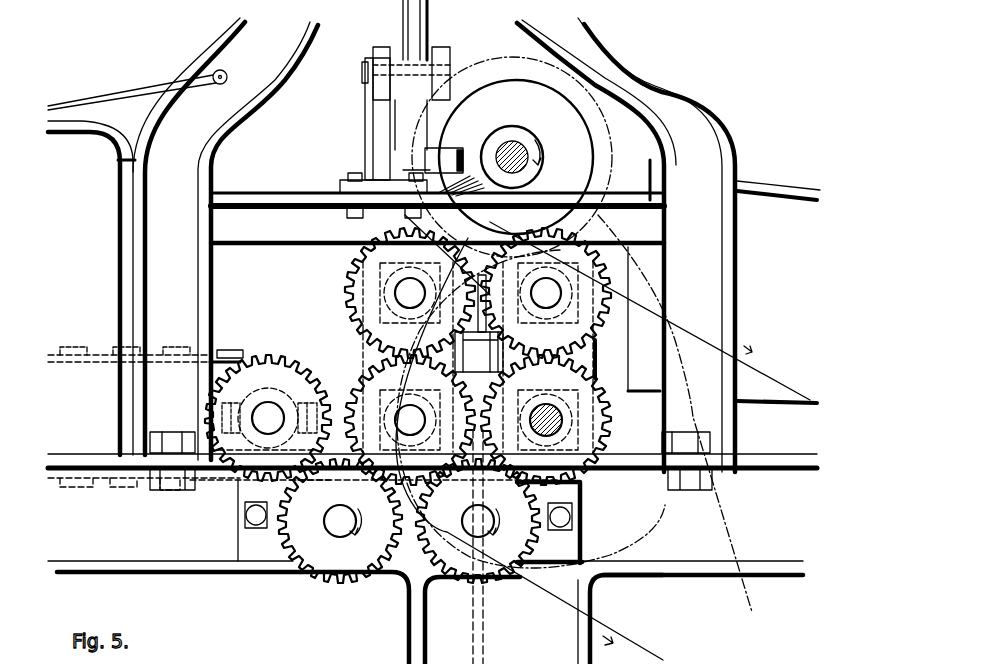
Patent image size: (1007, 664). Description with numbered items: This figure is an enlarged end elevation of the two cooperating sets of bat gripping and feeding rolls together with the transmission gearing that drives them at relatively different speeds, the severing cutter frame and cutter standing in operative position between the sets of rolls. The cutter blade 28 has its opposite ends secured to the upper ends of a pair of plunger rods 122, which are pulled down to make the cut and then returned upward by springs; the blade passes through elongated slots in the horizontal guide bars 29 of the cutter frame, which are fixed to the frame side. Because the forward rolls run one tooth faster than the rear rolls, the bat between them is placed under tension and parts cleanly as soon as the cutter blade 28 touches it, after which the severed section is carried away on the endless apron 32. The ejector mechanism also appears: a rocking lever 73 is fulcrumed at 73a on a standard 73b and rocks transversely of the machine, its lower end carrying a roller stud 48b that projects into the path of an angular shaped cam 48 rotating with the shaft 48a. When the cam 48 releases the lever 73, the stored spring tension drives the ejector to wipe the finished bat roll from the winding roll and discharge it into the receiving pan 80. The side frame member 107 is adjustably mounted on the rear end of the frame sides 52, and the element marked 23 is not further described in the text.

The receiving pan 80 is at (137, 88).
The rocking lever 73 is at (402, 33).
The fulcrum 73a is at (430, 55).
The standard 73b is at (447, 62).
The angular shaped cam 48 is at (512, 157).
The shaft 48a is at (527, 155).
The roller stud 48b is at (460, 142).
The cutter blade 28 is at (481, 275).
The horizontal guide bars 29 is at (479, 323).
The side frame member 107 is at (183, 239).
The endless apron 32 is at (86, 347).
The frame column 23 is at (668, 245).
The frame sides 52 is at (574, 413).
The plunger rods 122 is at (481, 613).